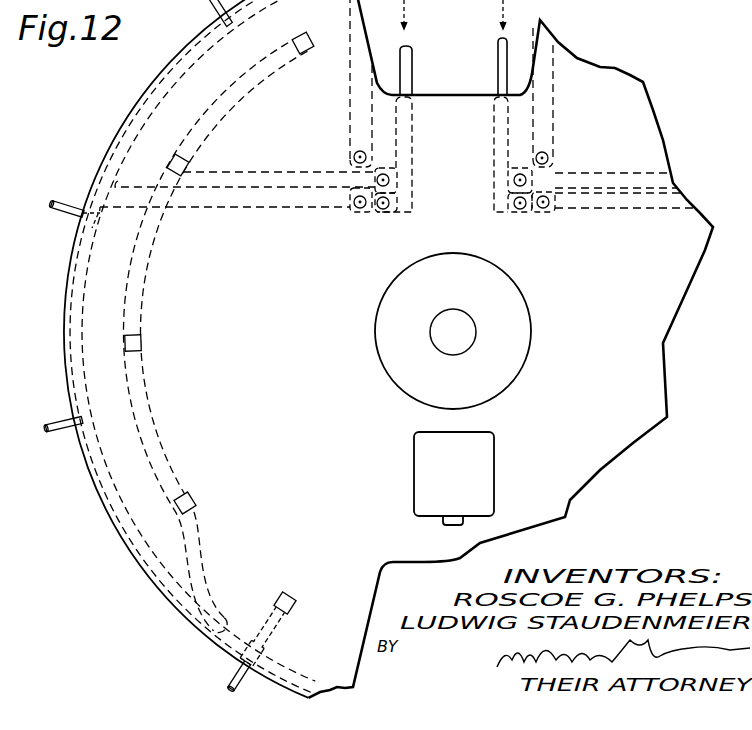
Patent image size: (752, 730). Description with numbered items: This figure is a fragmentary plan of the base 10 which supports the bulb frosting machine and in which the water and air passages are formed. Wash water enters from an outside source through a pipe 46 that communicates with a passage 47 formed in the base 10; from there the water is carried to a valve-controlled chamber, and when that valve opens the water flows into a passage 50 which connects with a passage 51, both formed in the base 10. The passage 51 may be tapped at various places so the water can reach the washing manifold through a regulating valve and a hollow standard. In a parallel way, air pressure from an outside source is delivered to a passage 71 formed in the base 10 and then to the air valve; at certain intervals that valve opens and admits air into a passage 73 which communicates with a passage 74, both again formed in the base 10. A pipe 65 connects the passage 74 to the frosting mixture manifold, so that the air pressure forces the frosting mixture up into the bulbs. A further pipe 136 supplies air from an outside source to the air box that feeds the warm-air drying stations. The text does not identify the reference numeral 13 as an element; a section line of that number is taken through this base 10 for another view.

The base 10 is at (653, 381).
The connecting passage 13 is at (50, 201).
The pipe 46 is at (412, 70).
The passage 47 is at (402, 150).
The passage 50 is at (292, 175).
The passage 51 is at (226, 110).
The pipe 65 is at (212, 9).
The passage 71 is at (350, 108).
The passage 73 is at (303, 200).
The passage 74 is at (183, 58).
The pipe 136 is at (238, 670).